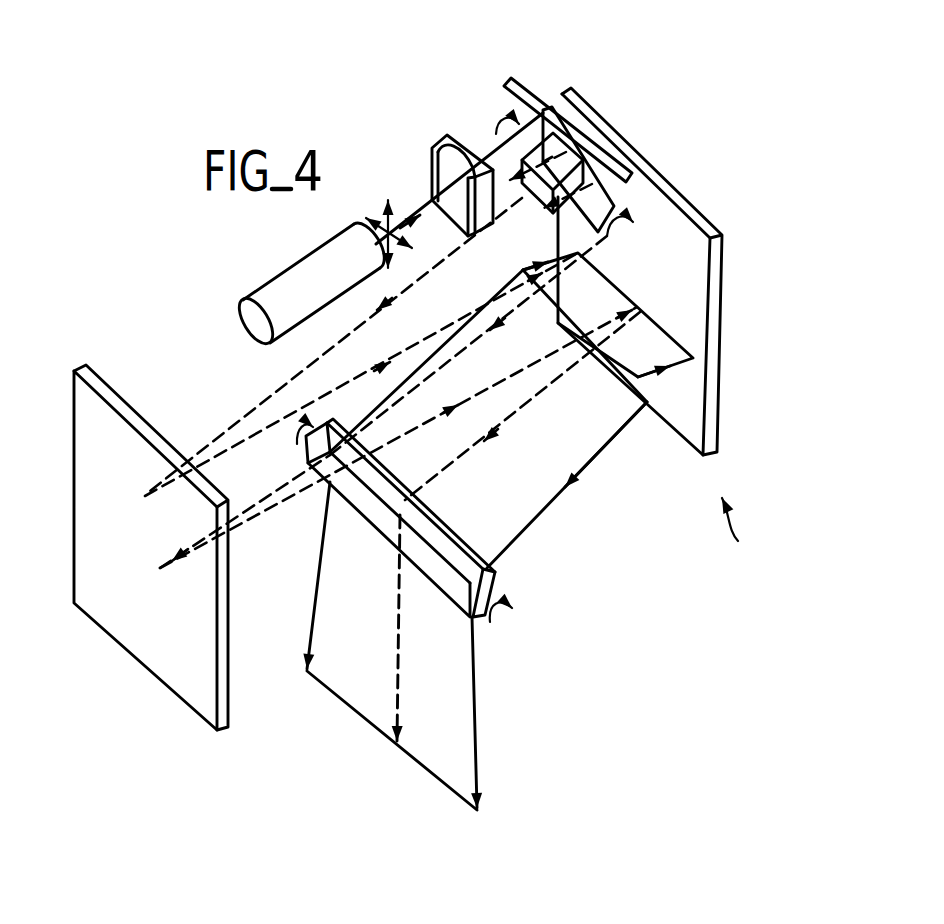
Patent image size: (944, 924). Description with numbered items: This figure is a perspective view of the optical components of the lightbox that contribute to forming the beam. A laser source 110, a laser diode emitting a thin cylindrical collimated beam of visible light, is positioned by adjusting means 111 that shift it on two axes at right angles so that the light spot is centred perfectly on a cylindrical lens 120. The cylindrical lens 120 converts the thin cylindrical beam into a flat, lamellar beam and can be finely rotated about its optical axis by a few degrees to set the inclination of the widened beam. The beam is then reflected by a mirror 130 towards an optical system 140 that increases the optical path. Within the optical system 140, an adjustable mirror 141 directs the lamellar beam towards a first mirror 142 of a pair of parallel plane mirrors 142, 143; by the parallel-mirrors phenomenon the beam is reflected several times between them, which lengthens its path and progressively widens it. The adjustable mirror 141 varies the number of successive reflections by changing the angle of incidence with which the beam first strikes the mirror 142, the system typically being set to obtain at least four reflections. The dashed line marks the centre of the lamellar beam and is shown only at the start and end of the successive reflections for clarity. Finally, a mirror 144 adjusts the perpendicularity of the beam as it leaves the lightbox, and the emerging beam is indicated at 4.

The scanned surface 4 is at (354, 694).
The laser source 110 is at (303, 268).
The means for adjusting the position of the laser source 111 is at (380, 210).
The cylindrical lens 120 is at (452, 133).
The mirror 130 is at (534, 90).
The optical system 140 is at (746, 540).
The adjustable mirror 141 is at (601, 201).
The first mirror 142 is at (87, 540).
The second mirror 143 is at (720, 306).
The mirror 144 is at (488, 570).